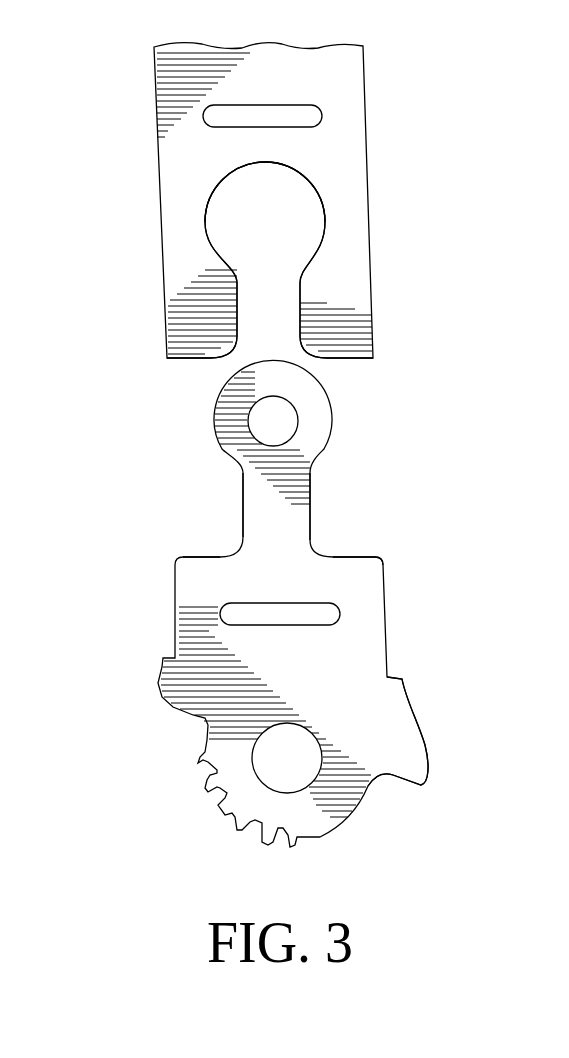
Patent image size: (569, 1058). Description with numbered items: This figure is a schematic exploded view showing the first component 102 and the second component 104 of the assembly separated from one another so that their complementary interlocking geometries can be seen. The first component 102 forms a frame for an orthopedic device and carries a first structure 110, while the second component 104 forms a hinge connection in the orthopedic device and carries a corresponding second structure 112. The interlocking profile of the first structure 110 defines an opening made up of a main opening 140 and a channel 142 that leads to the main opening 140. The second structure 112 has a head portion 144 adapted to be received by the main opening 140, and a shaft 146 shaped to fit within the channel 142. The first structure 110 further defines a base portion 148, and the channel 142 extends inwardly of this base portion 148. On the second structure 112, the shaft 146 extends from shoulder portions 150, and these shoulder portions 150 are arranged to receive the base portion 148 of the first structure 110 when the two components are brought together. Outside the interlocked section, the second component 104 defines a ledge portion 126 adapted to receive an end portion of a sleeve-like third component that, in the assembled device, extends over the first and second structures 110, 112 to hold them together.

The first component 102 is at (183, 162).
The second component 104 is at (200, 575).
The first structure 110 is at (313, 182).
The second structure 112 is at (334, 420).
The ledge portion 126 is at (398, 672).
The main opening 140 is at (325, 237).
The channel 142 is at (300, 297).
The head portion 144 is at (222, 388).
The shaft 146 is at (242, 495).
The base portion 148 is at (357, 360).
The shoulder portions 150 is at (347, 556).